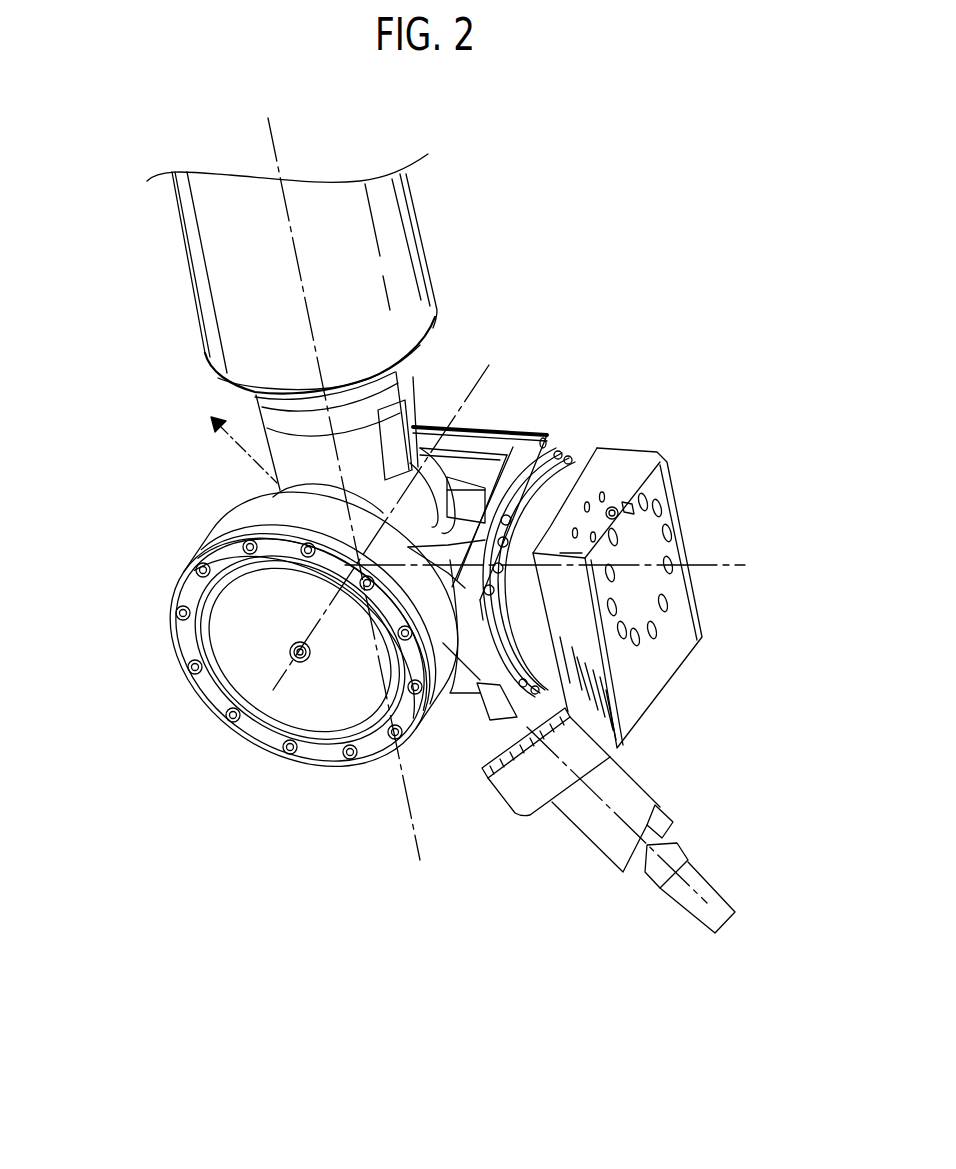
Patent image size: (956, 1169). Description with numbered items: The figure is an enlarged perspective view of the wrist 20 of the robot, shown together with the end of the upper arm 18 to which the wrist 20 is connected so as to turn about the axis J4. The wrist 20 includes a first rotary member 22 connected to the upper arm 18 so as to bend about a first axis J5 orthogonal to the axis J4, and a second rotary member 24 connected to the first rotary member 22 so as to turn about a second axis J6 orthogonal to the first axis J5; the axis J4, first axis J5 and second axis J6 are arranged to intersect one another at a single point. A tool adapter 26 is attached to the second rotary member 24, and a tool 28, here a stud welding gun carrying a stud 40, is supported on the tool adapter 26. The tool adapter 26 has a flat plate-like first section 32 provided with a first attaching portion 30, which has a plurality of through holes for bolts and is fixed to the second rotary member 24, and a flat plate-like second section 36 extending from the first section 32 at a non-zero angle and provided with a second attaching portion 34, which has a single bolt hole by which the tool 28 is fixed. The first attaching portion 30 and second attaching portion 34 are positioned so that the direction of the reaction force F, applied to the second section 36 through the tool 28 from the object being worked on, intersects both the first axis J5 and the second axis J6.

The upper arm 18 is at (235, 272).
The wrist 20 is at (163, 706).
The first rotary member 22 is at (330, 722).
The second rotary member 24 is at (540, 500).
The tool adapter 26 is at (680, 667).
The tool 28 is at (580, 837).
The first attaching portion 30 is at (614, 507).
The first section 32 is at (596, 449).
The second attaching portion 34 is at (493, 727).
The second section 36 is at (495, 752).
The stud 40 is at (685, 903).
The axis J4 is at (266, 119).
The first axis J5 is at (489, 360).
The second axis J6 is at (740, 566).
The reaction force F is at (235, 438).